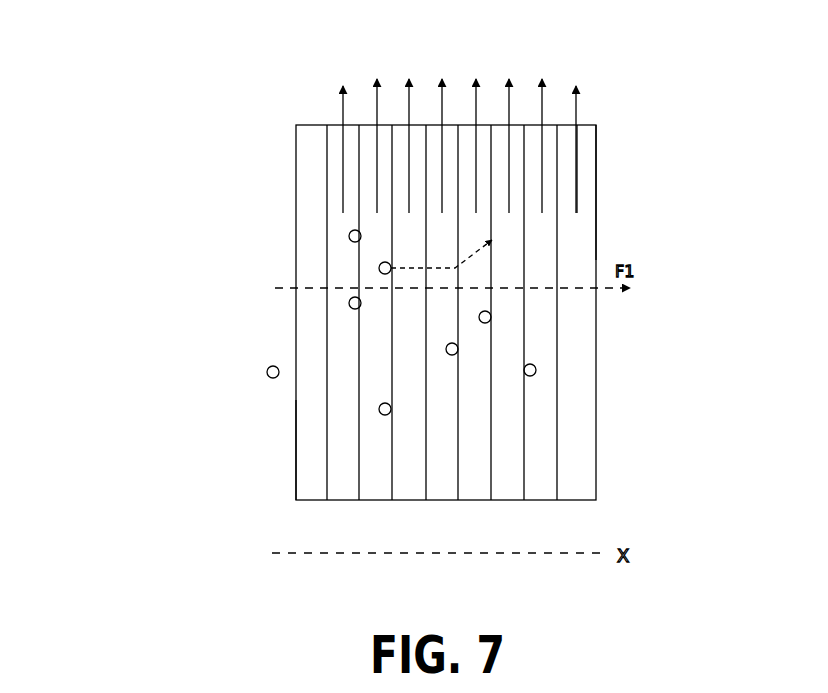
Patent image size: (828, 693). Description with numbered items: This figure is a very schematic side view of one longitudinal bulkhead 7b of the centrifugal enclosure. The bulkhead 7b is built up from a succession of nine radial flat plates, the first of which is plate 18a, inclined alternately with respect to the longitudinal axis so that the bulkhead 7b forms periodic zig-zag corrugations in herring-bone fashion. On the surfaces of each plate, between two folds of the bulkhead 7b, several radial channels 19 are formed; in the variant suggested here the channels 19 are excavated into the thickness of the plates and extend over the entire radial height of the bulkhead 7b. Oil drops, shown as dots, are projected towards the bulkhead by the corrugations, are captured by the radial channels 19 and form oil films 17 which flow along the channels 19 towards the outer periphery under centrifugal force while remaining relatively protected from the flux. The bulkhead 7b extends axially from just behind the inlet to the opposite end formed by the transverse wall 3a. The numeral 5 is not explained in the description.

The separation device housing 5 is at (296, 190).
The radial flat plate 18a is at (563, 122).
The oil film 17 is at (418, 78).
The radial channel 19 is at (316, 285).
The longitudinal bulkhead 7b is at (296, 447).
The transverse wall 3a is at (613, 192).